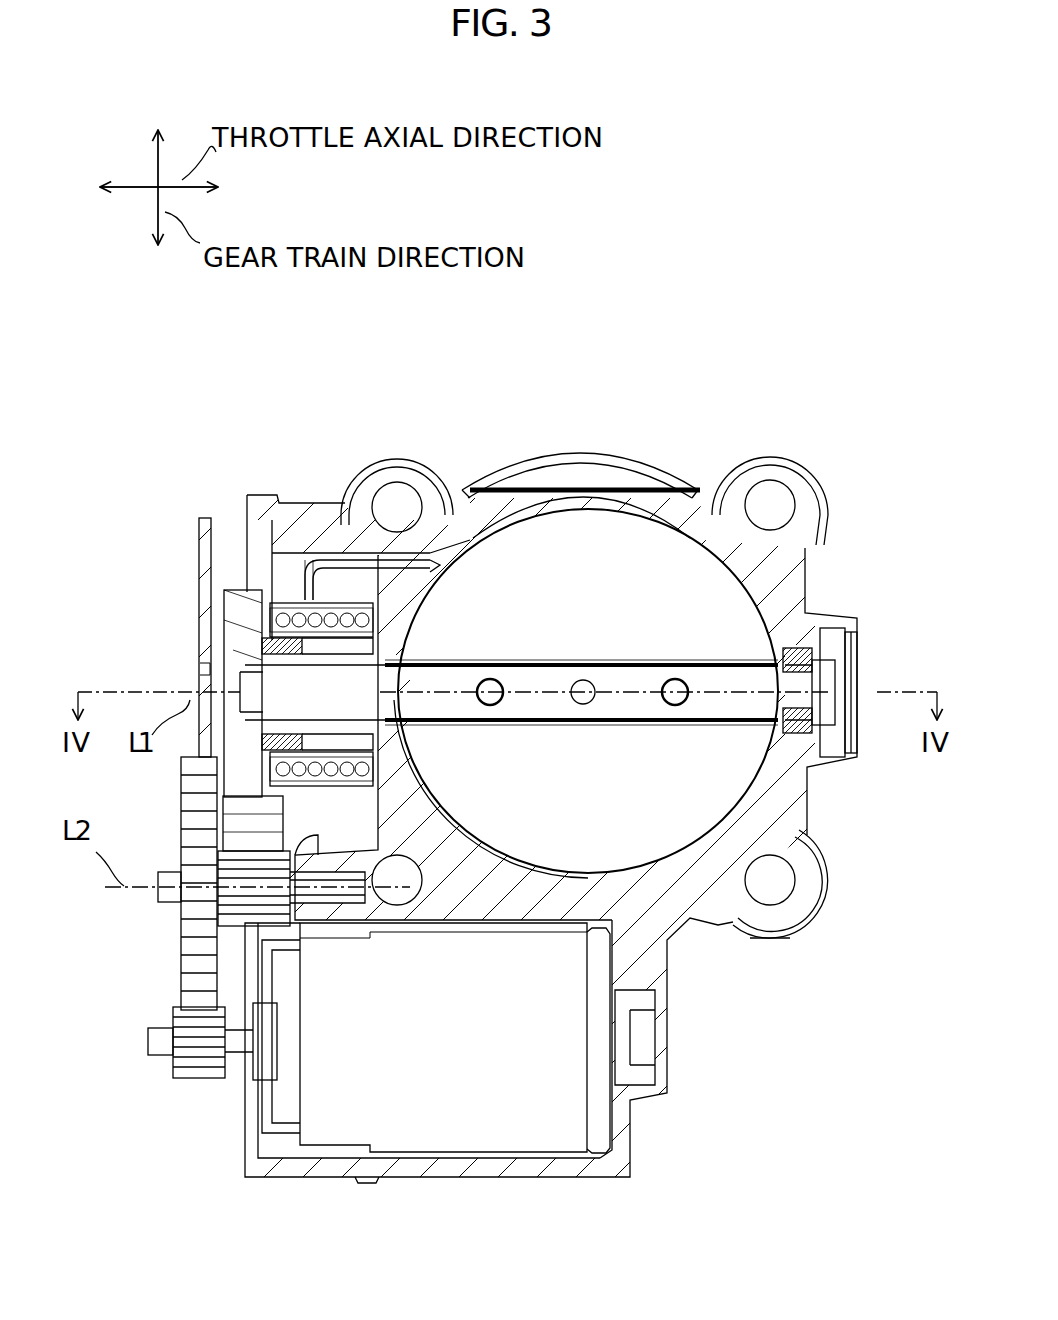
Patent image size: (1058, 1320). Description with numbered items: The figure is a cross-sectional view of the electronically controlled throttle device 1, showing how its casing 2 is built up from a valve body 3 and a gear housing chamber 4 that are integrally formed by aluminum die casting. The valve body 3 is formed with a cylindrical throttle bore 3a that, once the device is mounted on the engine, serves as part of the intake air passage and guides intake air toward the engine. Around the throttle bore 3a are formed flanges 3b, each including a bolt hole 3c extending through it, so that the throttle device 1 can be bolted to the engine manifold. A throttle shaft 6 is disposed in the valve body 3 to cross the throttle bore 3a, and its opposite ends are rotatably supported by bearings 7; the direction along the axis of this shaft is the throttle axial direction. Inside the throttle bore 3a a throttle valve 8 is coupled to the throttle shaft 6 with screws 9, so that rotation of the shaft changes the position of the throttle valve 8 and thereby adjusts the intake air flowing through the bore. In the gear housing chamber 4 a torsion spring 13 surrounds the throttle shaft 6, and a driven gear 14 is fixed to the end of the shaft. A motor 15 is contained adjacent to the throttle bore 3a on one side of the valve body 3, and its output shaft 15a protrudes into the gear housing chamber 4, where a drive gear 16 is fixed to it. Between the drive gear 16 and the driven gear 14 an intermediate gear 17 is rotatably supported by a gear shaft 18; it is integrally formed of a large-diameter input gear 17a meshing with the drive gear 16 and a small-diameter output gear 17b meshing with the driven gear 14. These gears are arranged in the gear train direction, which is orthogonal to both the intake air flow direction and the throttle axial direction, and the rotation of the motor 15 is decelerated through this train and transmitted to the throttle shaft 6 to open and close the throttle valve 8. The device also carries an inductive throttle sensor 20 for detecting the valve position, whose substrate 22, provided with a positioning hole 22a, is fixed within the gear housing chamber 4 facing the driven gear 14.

The throttle device 1 is at (660, 366).
The casing 2 is at (440, 338).
The valve body 3 is at (540, 472).
The throttle bore 3a is at (728, 603).
The flange 3b is at (362, 468).
The bolt hole 3c is at (398, 500).
The gear housing chamber 4 is at (205, 478).
The throttle shaft 6 is at (550, 668).
The bearing 7 is at (818, 640).
The throttle valve 8 is at (728, 774).
The screw 9 is at (490, 706).
The torsion spring 13 is at (328, 608).
The driven gear 14 is at (232, 600).
The motor 15 is at (492, 1135).
The output shaft 15a is at (158, 1042).
The drive gear 16 is at (196, 1080).
The intermediate gear 17 is at (94, 905).
The input gear 17a is at (187, 910).
The output gear 17b is at (237, 915).
The gear shaft 18 is at (168, 880).
The inductive throttle sensor 20 is at (110, 505).
The substrate 22 is at (198, 538).
The positioning hole 22a is at (200, 668).